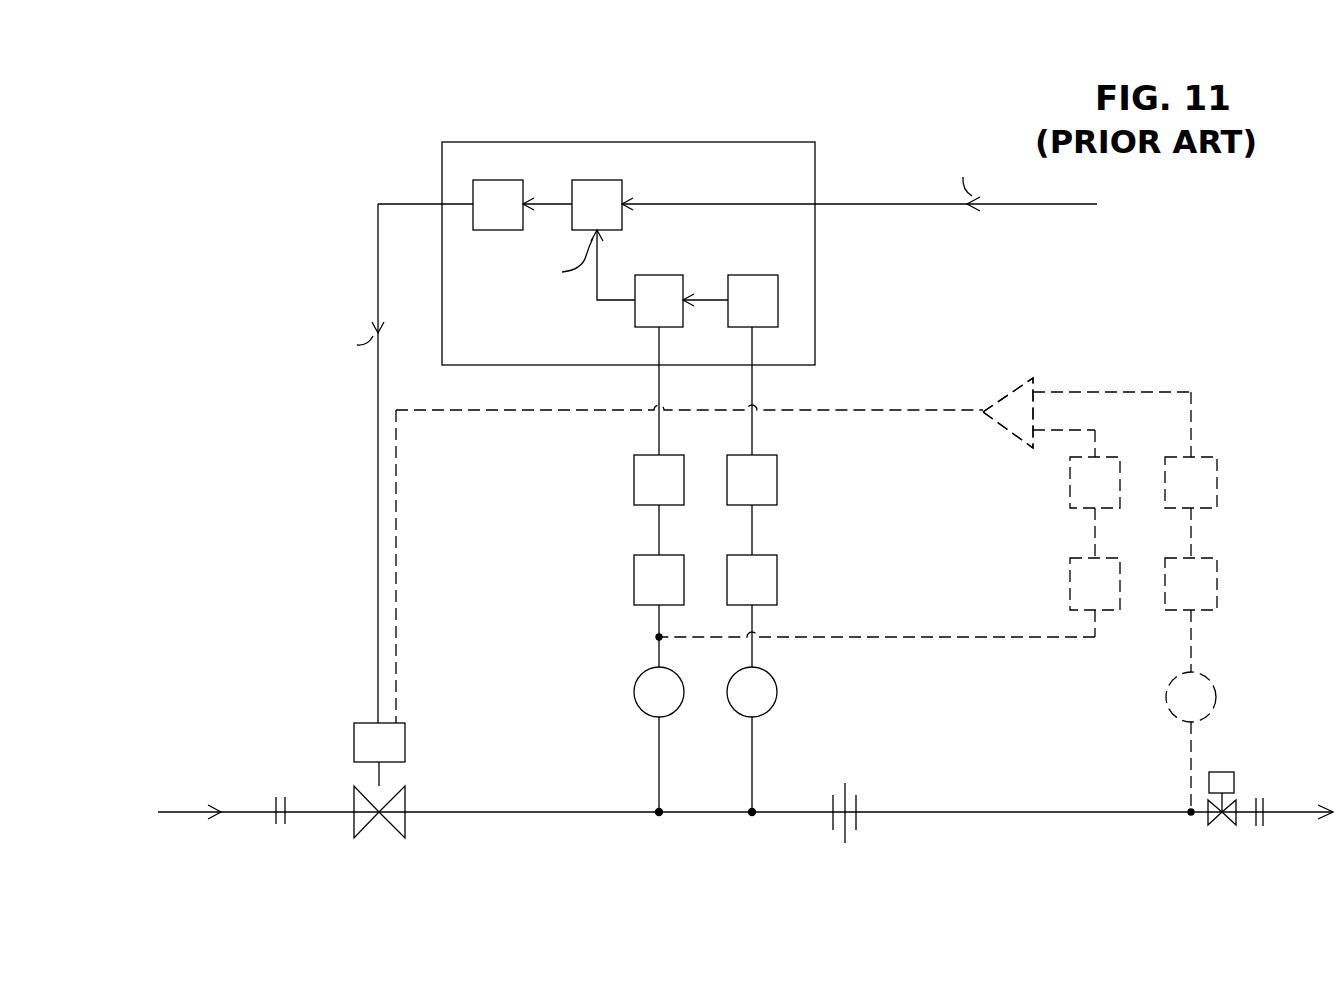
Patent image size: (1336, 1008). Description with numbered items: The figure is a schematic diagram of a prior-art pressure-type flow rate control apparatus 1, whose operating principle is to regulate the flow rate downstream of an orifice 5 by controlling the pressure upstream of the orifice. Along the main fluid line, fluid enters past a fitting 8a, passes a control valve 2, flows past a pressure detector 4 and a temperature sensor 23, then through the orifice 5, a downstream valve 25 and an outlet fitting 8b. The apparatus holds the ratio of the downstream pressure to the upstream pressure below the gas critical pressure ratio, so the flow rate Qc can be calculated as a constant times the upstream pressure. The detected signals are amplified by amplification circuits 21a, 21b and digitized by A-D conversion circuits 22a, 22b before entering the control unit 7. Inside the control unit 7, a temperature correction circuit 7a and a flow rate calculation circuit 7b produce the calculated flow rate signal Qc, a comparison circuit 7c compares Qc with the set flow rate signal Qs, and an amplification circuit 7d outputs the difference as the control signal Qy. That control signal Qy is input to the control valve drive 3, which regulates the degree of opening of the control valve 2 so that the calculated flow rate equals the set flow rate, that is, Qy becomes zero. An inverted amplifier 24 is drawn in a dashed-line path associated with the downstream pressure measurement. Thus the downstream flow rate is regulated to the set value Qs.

The pressure-type flow rate control apparatus 1 is at (252, 165).
The control valve 2 is at (407, 818).
The control valve drive 3 is at (395, 742).
The pressure detector 4 is at (634, 692).
The orifice 5 is at (850, 838).
The control unit 7 is at (692, 142).
The temperature correction circuit 7a is at (753, 288).
The flow rate calculation circuit 7b is at (665, 288).
The comparison circuit 7c is at (597, 188).
The amplification circuit 7d is at (496, 186).
The inlet flange 8a is at (273, 813).
The outlet flange 8b is at (1265, 820).
The amplification circuit 21a is at (634, 583).
The amplification circuit 21b is at (765, 580).
The A-D conversion circuit 22a is at (634, 483).
The A-D conversion circuit 22b is at (765, 480).
The temperature sensor T1 23 is at (773, 700).
The inverted amplifier 24 is at (1010, 393).
The valve 25 is at (1222, 830).